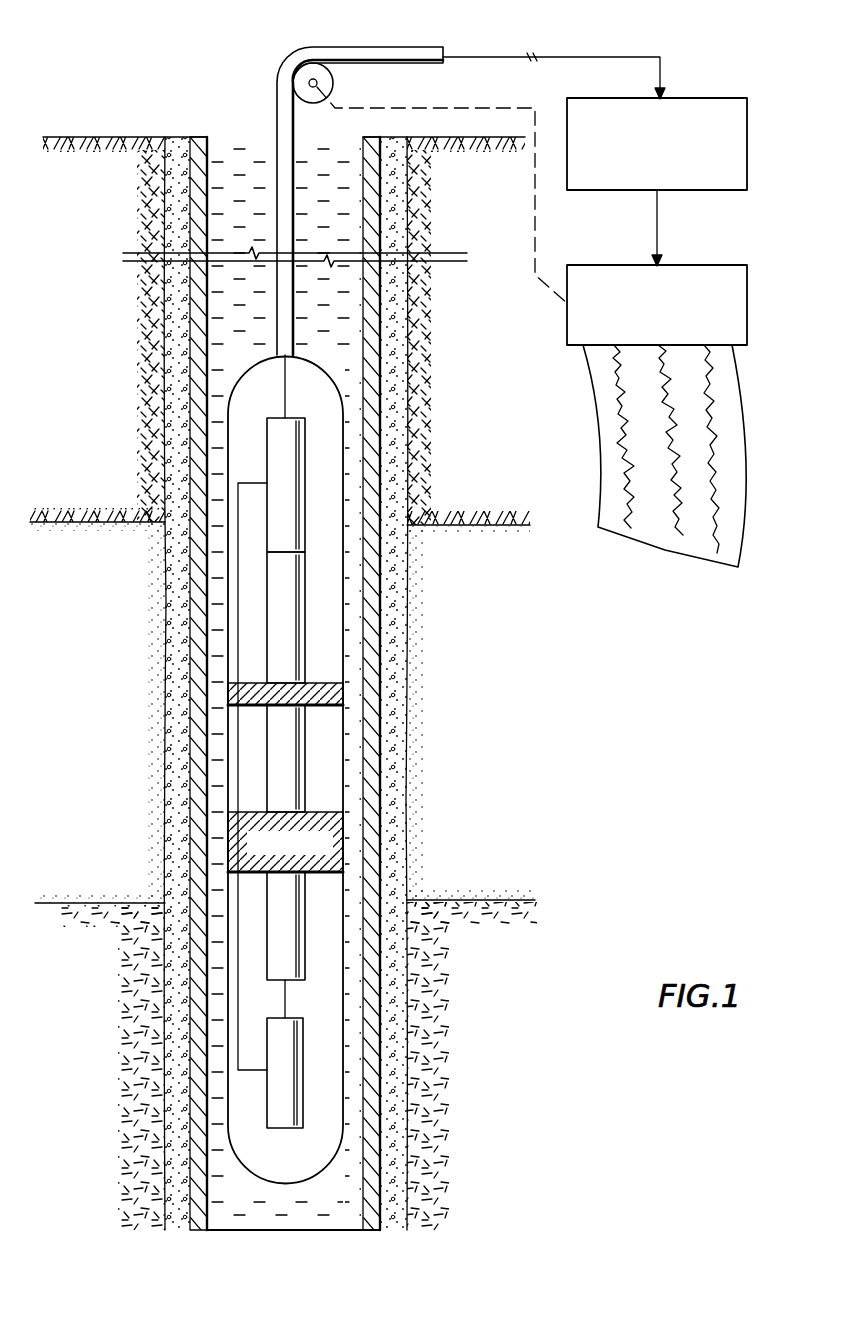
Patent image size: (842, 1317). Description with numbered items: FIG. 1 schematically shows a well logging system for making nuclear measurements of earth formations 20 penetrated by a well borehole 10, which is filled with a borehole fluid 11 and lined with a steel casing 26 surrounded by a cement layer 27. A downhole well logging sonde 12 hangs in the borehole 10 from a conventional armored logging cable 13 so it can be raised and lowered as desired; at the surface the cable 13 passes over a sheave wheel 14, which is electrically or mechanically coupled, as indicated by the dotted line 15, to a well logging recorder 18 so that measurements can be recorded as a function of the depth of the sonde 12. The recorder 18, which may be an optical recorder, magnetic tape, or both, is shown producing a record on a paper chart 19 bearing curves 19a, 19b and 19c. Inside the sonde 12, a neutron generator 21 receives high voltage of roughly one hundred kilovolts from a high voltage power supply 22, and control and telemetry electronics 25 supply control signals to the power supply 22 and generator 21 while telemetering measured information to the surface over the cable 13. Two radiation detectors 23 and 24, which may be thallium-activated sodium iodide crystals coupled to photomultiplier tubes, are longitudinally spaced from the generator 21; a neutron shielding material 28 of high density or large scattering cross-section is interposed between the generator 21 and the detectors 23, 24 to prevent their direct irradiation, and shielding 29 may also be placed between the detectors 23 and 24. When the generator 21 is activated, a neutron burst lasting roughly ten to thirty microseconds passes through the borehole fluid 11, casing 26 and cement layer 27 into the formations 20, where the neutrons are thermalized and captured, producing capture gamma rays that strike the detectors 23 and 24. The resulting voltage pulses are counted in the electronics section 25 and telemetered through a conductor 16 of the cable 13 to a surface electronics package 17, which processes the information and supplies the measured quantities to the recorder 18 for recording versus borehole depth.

The well borehole 10 is at (228, 116).
The borehole fluid 11 is at (344, 311).
The downhole well logging sonde 12 is at (228, 408).
The armored logging cable 13 is at (369, 47).
The sheave wheel 14 is at (335, 82).
The dotted line 15 is at (462, 108).
The conductor 16 is at (598, 57).
The surface electronics package 17 is at (727, 98).
The well logging recorder 18 is at (724, 265).
The paper chart 19 is at (636, 484).
The curve 19a is at (623, 445).
The curve 19b is at (670, 518).
The curve 19c is at (720, 518).
The earth formations 20 is at (109, 698).
The neutron generator 21 is at (267, 937).
The high voltage power supply 22 is at (303, 1090).
The radiation detector 23 is at (267, 760).
The radiation detector 24 is at (266, 608).
The control and telemetry electronics 25 is at (305, 452).
The steel casing 26 is at (380, 492).
The cement layer 27 is at (393, 765).
The neutron shielding material 28 is at (338, 843).
The shielding 29 is at (343, 689).